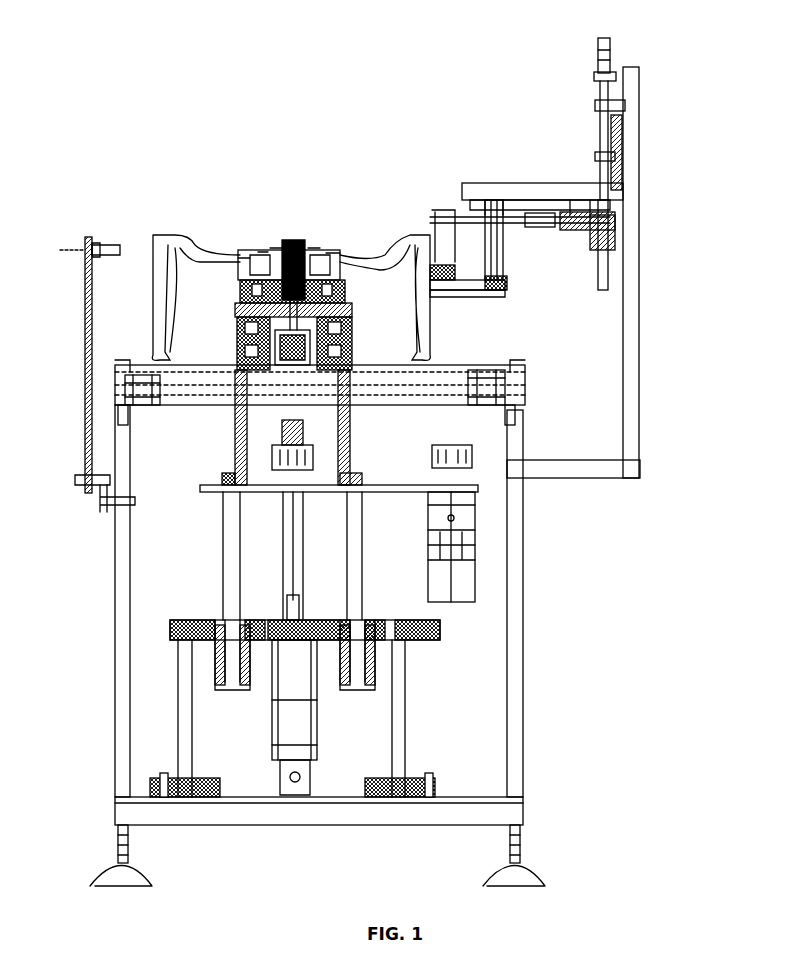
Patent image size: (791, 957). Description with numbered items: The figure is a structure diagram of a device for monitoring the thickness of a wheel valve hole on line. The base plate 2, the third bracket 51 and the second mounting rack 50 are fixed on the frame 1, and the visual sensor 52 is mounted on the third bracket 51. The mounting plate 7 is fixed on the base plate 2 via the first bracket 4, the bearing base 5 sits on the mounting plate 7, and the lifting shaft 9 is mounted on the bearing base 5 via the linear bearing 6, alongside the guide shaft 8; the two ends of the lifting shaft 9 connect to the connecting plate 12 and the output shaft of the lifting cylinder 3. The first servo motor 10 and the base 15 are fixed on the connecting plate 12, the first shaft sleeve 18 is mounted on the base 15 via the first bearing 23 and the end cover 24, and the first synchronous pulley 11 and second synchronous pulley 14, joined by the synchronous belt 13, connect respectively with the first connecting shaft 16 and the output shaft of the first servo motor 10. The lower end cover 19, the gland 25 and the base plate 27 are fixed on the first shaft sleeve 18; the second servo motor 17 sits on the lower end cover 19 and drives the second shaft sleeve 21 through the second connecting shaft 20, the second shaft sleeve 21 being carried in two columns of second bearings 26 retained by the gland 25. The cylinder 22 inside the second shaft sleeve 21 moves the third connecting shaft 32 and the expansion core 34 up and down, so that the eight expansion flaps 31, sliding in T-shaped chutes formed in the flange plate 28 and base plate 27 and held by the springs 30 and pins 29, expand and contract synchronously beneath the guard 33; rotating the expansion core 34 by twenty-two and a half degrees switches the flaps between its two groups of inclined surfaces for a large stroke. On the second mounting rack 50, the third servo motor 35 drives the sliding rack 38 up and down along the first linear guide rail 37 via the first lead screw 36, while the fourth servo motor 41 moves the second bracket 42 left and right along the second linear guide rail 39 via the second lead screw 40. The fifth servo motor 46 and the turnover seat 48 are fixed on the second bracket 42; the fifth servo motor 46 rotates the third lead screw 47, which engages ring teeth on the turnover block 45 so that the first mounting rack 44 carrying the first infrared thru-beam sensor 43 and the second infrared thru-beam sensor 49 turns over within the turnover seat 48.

The frame 1 is at (118, 848).
The base plate 2 is at (123, 818).
The lifting cylinder 3 is at (140, 805).
The first bracket 4 is at (152, 795).
The bearing base 5 is at (155, 785).
The linear bearing 6 is at (270, 766).
The mounting plate 7 is at (180, 760).
The guide shaft 8 is at (217, 677).
The lifting shaft 9 is at (227, 608).
The first servo motor 10 is at (283, 583).
The first synchronous pulley 11 is at (440, 520).
The connecting plate 12 is at (327, 490).
The synchronous belt 13 is at (382, 458).
The second synchronous pulley 14 is at (290, 456).
The base 15 is at (235, 445).
The first connecting shaft 16 is at (128, 410).
The second servo motor 17 is at (150, 372).
The first shaft sleeve 18 is at (230, 393).
The lower end cover 19 is at (237, 360).
The second connecting shaft 20 is at (240, 350).
The second shaft sleeve 21 is at (240, 340).
The cylinder 22 is at (240, 328).
The first bearing 23 is at (240, 318).
The end cover 24 is at (240, 305).
The gland 25 is at (243, 292).
The second bearings 26 is at (240, 278).
The base plate 27 is at (242, 268).
The flange plate 28 is at (255, 262).
The pins 29 is at (245, 262).
The springs 30 is at (262, 255).
The expansion flaps 31 is at (275, 250).
The third connecting shaft 32 is at (297, 245).
The guard 33 is at (313, 250).
The expansion core 34 is at (333, 255).
The third servo motor 35 is at (612, 48).
The first lead screw 36 is at (622, 108).
The first linear guide rail 37 is at (625, 145).
The sliding rack 38 is at (523, 190).
The second linear guide rail 39 is at (605, 195).
The second lead screw 40 is at (612, 203).
The fourth servo motor 41 is at (590, 210).
The second bracket 42 is at (605, 225).
The first infrared thru-beam sensor 43 is at (432, 217).
The first mounting rack 44 is at (500, 230).
The turnover block 45 is at (490, 260).
The fifth servo motor 46 is at (480, 275).
The third lead screw 47 is at (460, 285).
The turnover seat 48 is at (500, 290).
The second infrared thru-beam sensor 49 is at (490, 298).
The second mounting rack 50 is at (632, 430).
The third bracket 51 is at (88, 262).
The visual sensor 52 is at (103, 247).